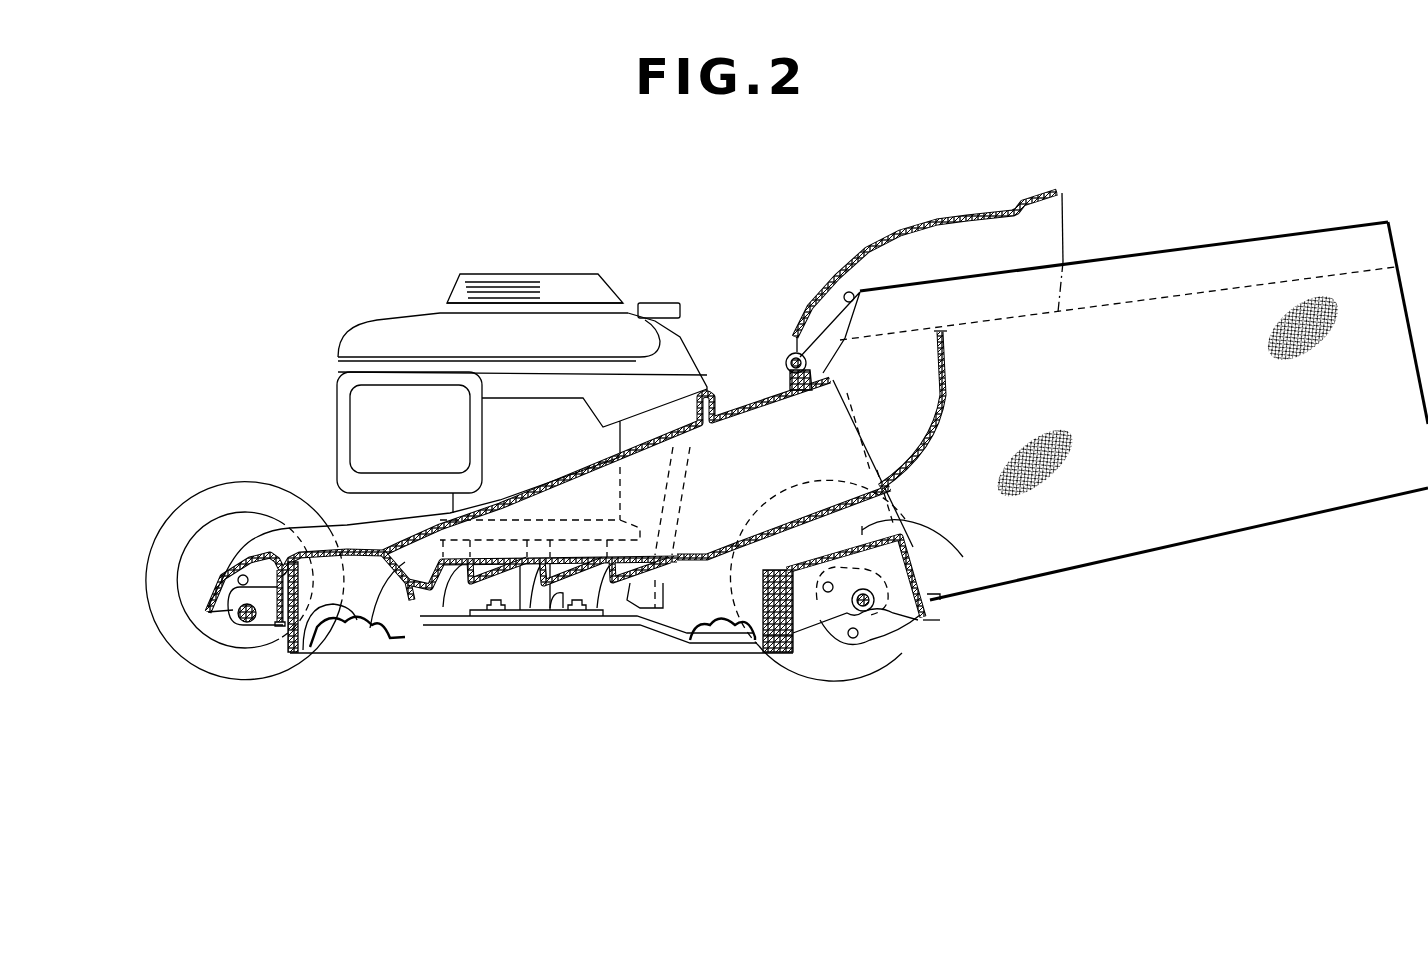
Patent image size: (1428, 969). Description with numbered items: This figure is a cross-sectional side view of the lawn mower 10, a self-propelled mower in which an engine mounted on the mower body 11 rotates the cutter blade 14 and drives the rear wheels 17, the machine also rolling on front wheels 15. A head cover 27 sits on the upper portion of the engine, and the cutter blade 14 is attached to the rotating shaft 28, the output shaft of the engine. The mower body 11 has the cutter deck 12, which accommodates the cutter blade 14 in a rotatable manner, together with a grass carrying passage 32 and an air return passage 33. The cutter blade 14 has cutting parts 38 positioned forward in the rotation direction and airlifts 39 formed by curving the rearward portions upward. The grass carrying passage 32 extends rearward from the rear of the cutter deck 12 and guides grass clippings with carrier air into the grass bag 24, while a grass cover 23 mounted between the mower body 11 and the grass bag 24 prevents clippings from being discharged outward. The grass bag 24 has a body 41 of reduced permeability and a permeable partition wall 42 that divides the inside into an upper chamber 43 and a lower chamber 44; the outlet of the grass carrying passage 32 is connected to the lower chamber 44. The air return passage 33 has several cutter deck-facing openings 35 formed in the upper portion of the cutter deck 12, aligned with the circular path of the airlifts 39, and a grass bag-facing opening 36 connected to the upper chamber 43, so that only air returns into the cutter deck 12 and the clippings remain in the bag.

The lawn mower 10 is at (518, 213).
The head cover 27 is at (387, 320).
The mower body 11 is at (596, 438).
The cutter deck 12 is at (380, 590).
The airlifts 39 is at (303, 653).
The cutter blade 14 is at (652, 657).
The rotating shaft 28 is at (562, 597).
The cutter deck-facing openings 35 is at (463, 573).
The cutting parts 38 is at (715, 652).
The air return passage 33 is at (764, 440).
The grass carrying passage 32 is at (963, 557).
The grass bag-facing opening 36 is at (937, 353).
The grass cover 23 is at (948, 218).
The rear wheels 17 is at (900, 657).
The grass bag 24 is at (1150, 586).
The upper chamber 43 is at (1167, 274).
The permeable partition wall 42 is at (1228, 290).
The body 41 is at (1198, 550).
The lower chamber 44 is at (1247, 476).
The front wheels 15 is at (217, 490).